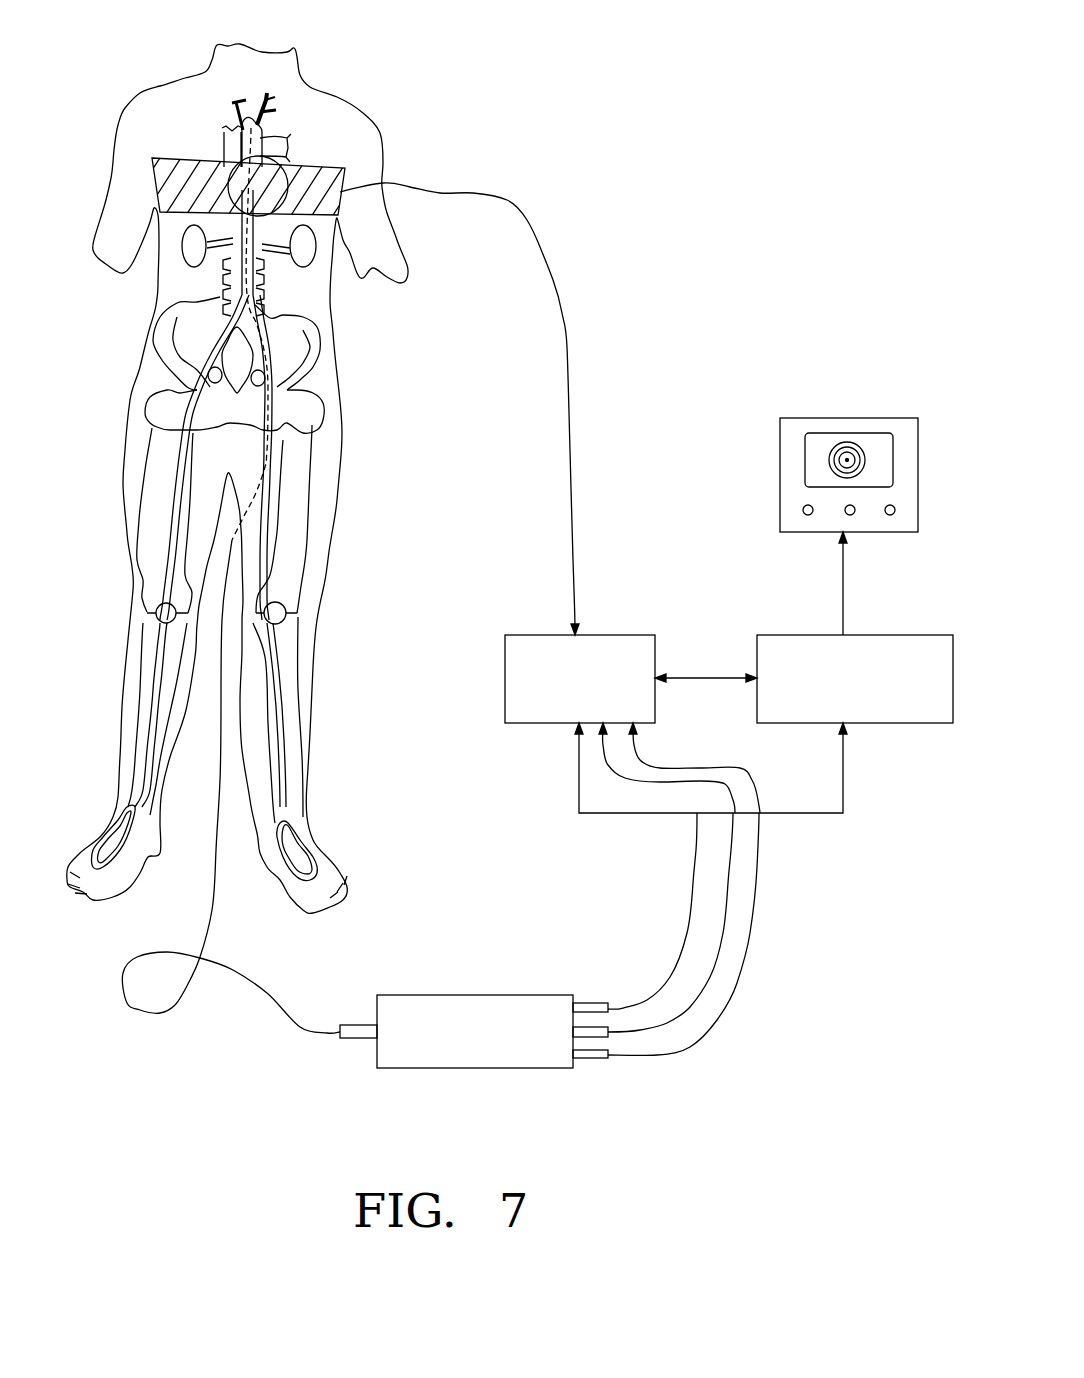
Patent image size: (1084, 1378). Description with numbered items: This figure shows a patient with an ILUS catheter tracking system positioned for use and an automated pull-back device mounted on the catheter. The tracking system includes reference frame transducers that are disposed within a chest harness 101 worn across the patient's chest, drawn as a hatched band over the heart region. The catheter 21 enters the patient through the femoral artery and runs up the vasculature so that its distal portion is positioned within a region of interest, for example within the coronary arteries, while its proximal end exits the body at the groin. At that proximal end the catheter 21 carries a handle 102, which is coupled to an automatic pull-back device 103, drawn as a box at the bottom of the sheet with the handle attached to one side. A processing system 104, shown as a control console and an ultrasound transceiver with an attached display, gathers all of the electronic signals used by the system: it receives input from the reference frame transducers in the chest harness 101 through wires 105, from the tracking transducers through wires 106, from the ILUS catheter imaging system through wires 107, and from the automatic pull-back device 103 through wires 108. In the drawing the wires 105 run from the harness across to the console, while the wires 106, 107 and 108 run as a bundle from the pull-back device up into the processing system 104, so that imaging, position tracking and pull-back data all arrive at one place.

The chest harness 101 is at (305, 170).
The catheter 21 is at (237, 968).
The handle 102 is at (360, 1038).
The automatic pull-back device 103 is at (465, 1068).
The processing system 104 is at (780, 468).
The wires 105 is at (553, 277).
The wires 106 is at (684, 1011).
The wires 107 is at (646, 998).
The wires 108 is at (742, 972).